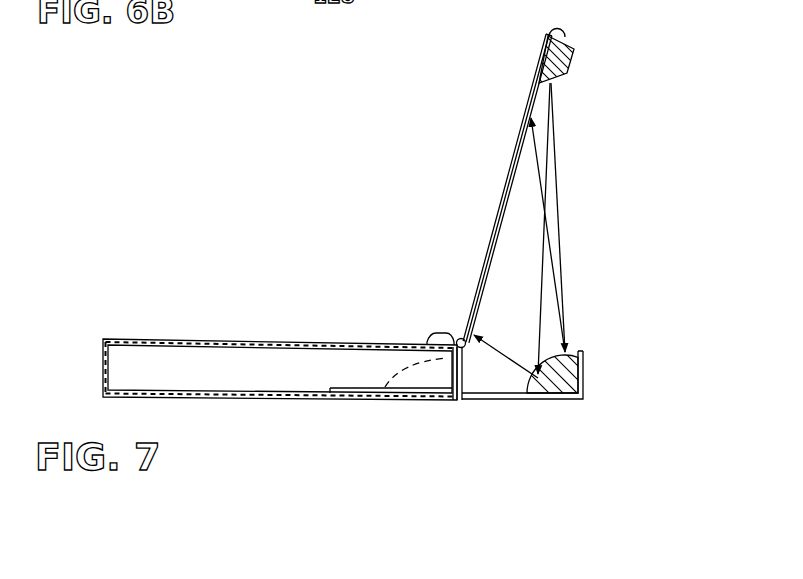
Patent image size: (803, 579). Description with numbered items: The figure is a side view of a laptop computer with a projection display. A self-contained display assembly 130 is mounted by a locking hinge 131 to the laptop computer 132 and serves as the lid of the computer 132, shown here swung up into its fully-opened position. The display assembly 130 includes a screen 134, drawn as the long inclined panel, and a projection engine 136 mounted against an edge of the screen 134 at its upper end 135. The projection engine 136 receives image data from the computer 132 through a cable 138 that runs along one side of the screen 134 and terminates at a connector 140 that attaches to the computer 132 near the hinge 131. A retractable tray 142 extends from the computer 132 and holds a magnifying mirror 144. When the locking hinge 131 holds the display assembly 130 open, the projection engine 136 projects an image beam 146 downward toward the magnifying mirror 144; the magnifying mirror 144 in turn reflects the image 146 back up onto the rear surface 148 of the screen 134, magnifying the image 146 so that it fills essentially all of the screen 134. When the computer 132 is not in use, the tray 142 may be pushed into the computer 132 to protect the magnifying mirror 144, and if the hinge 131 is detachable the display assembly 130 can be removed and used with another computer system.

The self-contained display assembly 130 is at (564, 22).
The locking hinge 131 is at (474, 350).
The laptop computer 132 is at (188, 336).
The screen 134 is at (517, 125).
The arm upper end 135 is at (546, 34).
The projection engine 136 is at (571, 67).
The cable 138 is at (561, 33).
The connector 140 is at (428, 340).
The retractable tray 142 is at (585, 368).
The magnifying mirror 144 is at (553, 393).
The image beam 146 is at (562, 181).
The rear surface 148 is at (490, 262).